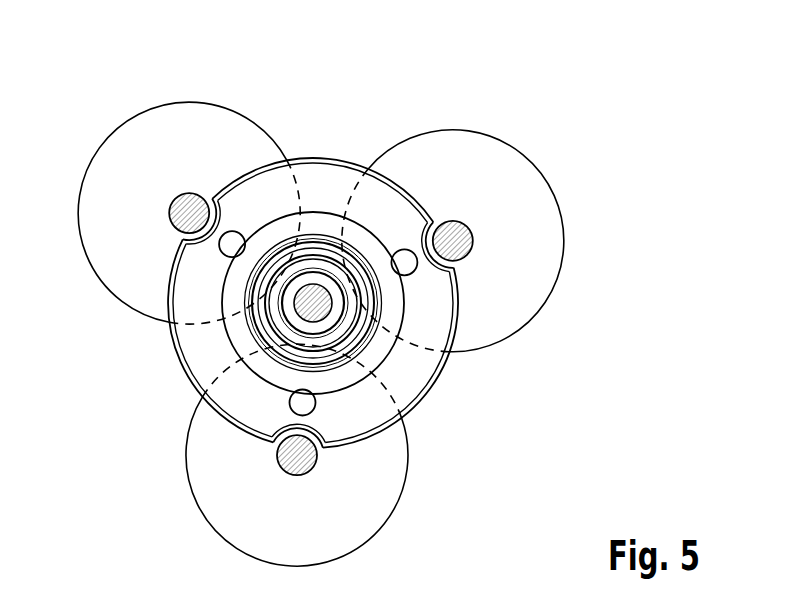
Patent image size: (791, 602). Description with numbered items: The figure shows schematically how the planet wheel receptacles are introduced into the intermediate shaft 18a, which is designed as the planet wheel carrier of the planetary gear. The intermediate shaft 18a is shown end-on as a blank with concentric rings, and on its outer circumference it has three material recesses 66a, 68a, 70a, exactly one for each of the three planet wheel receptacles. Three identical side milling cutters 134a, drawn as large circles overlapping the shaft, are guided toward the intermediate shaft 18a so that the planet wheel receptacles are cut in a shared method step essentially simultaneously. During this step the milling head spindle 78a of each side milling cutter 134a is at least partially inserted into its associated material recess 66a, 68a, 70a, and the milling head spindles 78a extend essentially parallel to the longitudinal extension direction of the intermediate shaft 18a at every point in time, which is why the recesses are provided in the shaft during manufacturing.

The intermediate shaft 18a is at (328, 186).
The material recess 66a is at (446, 277).
The material recess 68a is at (221, 201).
The material recess 70a is at (271, 429).
The milling head spindle 78a is at (186, 209).
The side milling cutter 134a is at (548, 285).